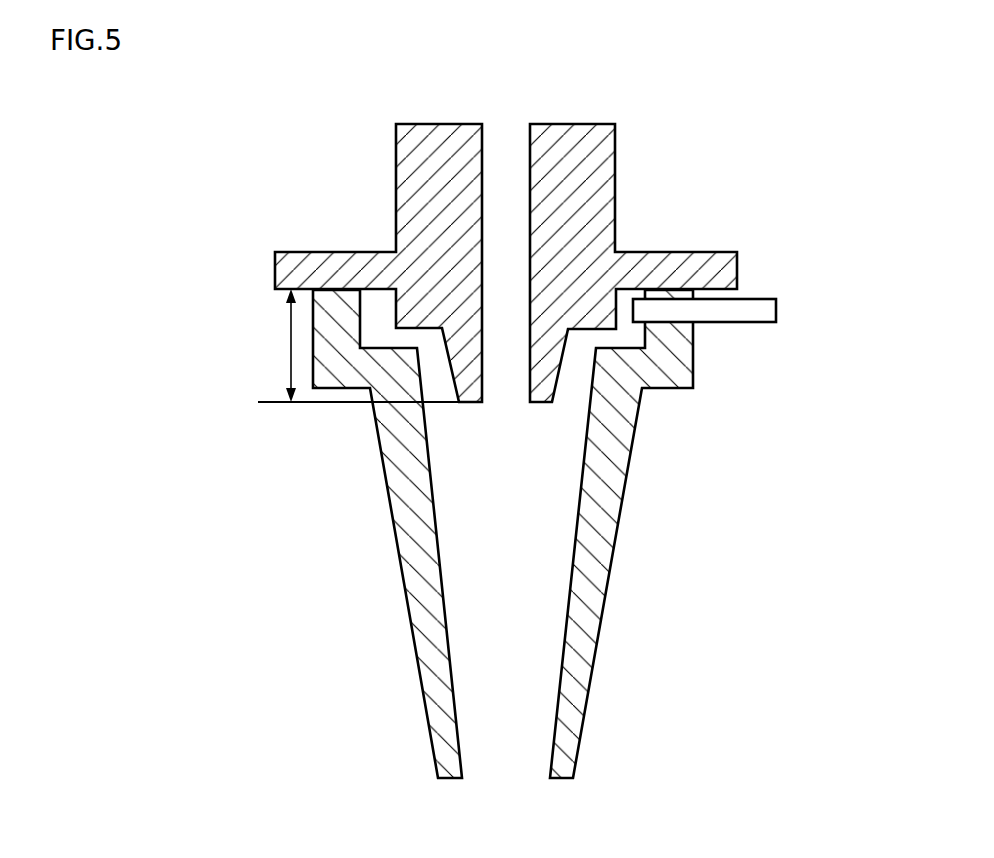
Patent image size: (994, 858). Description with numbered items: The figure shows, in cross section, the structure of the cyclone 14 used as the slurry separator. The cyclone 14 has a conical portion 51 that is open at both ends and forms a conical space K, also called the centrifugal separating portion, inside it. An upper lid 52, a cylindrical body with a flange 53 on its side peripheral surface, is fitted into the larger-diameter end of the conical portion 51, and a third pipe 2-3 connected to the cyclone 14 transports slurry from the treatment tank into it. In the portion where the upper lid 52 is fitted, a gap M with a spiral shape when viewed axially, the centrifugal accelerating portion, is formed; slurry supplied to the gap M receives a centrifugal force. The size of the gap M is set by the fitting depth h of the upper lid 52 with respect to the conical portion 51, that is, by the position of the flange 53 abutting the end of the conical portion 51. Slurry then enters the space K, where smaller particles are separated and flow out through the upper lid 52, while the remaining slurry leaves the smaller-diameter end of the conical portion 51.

The cyclone 14 is at (288, 216).
The gap M is at (380, 318).
The conical space K is at (488, 528).
The fitting depth h is at (370, 345).
The upper lid 52 is at (615, 225).
The flange 53 is at (737, 267).
The conical portion 51 is at (610, 577).
The third pipe 2-3 is at (776, 310).